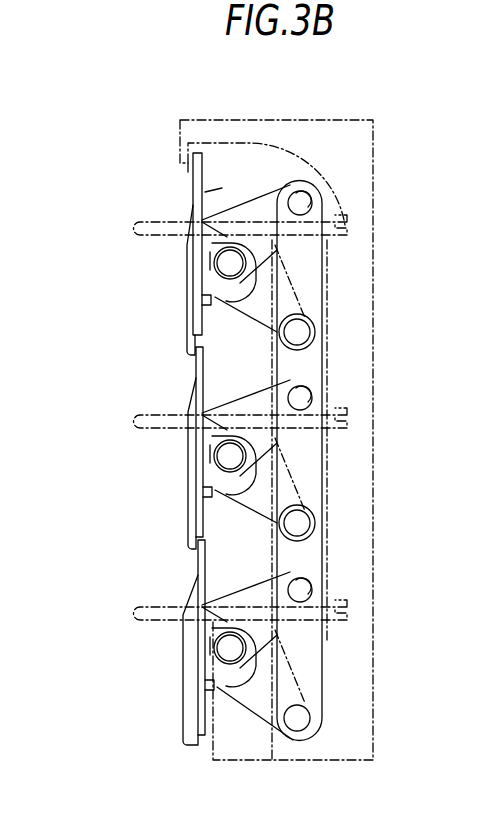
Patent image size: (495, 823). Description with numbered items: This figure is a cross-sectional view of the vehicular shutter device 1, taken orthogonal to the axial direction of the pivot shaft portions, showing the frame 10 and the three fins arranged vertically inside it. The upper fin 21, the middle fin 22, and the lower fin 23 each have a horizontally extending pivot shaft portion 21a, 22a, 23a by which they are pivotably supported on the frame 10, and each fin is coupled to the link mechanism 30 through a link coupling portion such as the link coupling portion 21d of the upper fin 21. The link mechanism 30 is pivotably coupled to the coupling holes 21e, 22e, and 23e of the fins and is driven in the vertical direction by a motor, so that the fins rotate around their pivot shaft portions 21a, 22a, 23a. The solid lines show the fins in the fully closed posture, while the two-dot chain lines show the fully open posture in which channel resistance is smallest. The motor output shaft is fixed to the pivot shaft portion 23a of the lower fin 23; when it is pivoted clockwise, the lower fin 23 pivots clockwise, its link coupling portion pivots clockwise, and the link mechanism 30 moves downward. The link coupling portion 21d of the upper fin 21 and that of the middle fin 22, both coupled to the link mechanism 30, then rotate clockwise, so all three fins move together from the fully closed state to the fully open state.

The vehicular shutter device 1 is at (280, 109).
The frame 10 is at (210, 118).
The upper fin 21 is at (213, 252).
The pivot shaft portion 21a is at (228, 276).
The link coupling portion 21d is at (220, 190).
The coupling hole 21e is at (310, 210).
The middle fin 22 is at (218, 448).
The pivot shaft portion 22a is at (222, 470).
The coupling hole 22e is at (312, 405).
The lower fin 23 is at (215, 642).
The pivot shaft portion 23a is at (225, 652).
The coupling hole 23e is at (312, 602).
The link mechanism 30 is at (366, 466).